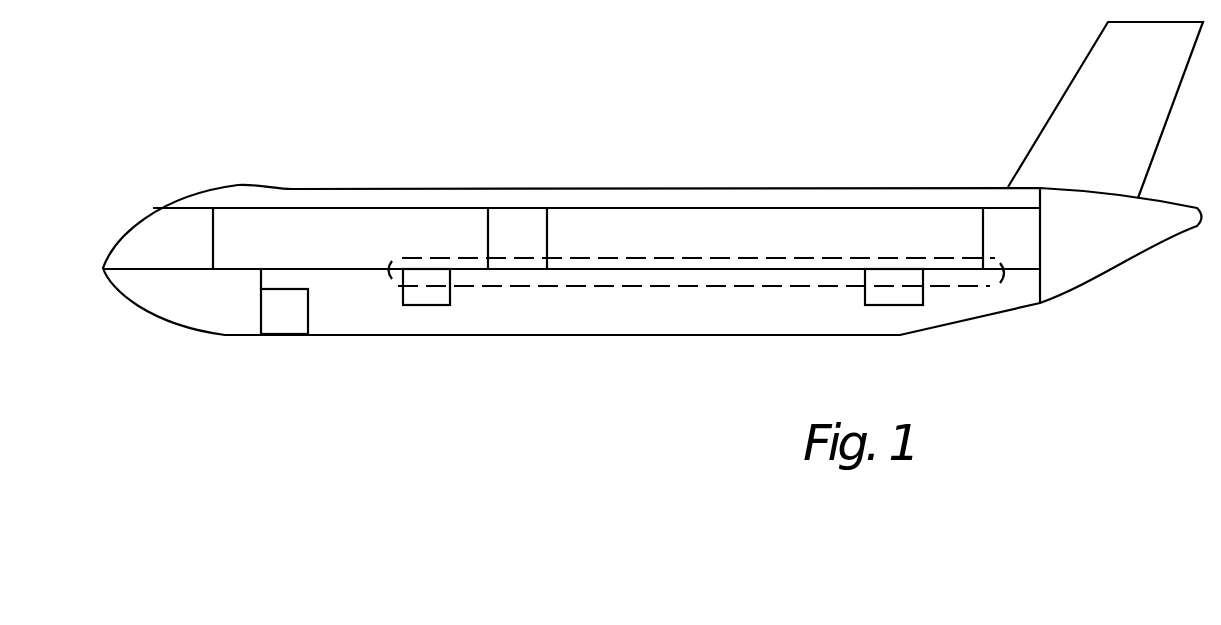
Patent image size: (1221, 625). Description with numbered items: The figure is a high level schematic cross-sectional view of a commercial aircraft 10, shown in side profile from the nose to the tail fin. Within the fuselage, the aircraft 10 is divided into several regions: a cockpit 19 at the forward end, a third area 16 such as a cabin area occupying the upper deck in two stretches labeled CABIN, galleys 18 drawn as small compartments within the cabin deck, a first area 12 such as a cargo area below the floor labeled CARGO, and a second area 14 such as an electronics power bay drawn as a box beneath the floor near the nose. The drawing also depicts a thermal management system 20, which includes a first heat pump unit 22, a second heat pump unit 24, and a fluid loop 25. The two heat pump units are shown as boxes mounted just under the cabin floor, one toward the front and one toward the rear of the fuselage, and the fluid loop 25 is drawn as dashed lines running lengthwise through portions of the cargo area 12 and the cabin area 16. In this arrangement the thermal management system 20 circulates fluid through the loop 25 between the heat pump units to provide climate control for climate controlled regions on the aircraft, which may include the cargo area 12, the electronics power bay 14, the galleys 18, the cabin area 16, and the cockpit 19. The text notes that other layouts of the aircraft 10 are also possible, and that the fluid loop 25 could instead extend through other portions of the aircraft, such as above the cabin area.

The aircraft 10 is at (827, 149).
The first area 12 is at (488, 302).
The second area 14 is at (261, 312).
The third area 16 is at (374, 249).
The galleys 18 is at (547, 235).
The cockpit 19 is at (163, 252).
The thermal management system 20 is at (638, 292).
The first heat pump unit 22 is at (410, 305).
The second heat pump unit 24 is at (923, 295).
The fluid loop 25 is at (730, 286).